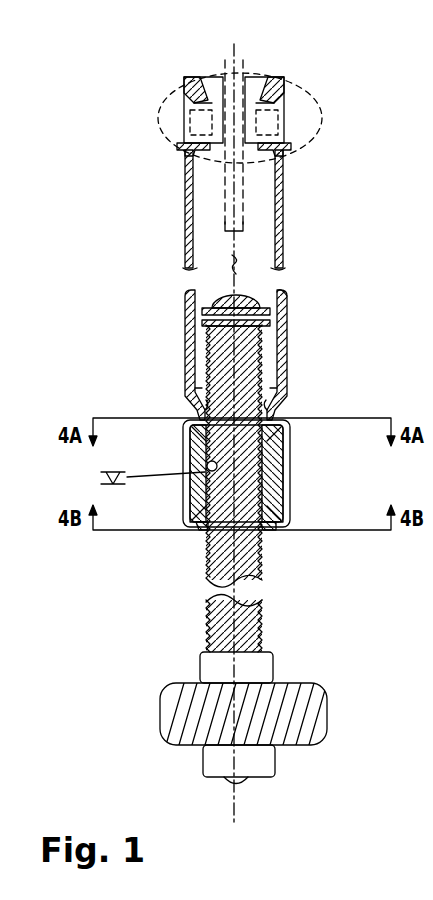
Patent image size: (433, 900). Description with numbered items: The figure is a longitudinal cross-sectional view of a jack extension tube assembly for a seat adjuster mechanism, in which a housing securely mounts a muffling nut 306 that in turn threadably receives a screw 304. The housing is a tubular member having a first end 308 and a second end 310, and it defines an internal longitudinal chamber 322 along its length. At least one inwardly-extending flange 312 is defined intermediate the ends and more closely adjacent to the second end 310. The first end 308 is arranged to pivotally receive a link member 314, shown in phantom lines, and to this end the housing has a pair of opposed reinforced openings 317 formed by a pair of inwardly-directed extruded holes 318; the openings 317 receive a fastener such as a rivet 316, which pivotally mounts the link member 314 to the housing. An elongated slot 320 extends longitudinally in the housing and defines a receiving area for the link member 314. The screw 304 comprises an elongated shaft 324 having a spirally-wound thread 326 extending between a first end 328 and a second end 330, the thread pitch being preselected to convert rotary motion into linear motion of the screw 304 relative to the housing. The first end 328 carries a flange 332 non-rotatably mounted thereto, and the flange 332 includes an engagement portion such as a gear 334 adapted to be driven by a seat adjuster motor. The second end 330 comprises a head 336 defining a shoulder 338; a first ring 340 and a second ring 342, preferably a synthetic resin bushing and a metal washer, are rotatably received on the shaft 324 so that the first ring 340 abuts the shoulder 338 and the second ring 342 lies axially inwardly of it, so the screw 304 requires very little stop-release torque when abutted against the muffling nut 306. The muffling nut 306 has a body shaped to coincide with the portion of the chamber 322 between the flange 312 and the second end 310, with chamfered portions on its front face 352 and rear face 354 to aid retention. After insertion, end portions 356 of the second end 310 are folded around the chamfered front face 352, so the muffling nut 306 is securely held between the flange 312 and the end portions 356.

The screw 304 is at (272, 575).
The muffling nut 306 is at (285, 507).
The first end 308 is at (88, 70).
The second end 310 is at (55, 420).
The inwardly-extending flange 312 is at (270, 415).
The link member 314 is at (238, 66).
The rivet 316 is at (302, 111).
The reinforced openings 317 is at (186, 142).
The inwardly-directed extruded holes 318 is at (198, 97).
The elongated slot 320 is at (224, 190).
The internal longitudinal chamber 322 is at (238, 266).
The elongated shaft 324 is at (220, 565).
The spirally-wound thread 326 is at (266, 626).
The first end 328 is at (325, 777).
The second end 330 is at (302, 290).
The flange 332 is at (213, 762).
The gear 334 is at (160, 710).
The head 336 is at (218, 299).
The shoulder 338 is at (281, 292).
The first ring 340 is at (203, 312).
The second ring 342 is at (203, 324).
The front face 352 is at (283, 497).
The rear face 354 is at (207, 440).
The end portions 356 is at (198, 528).